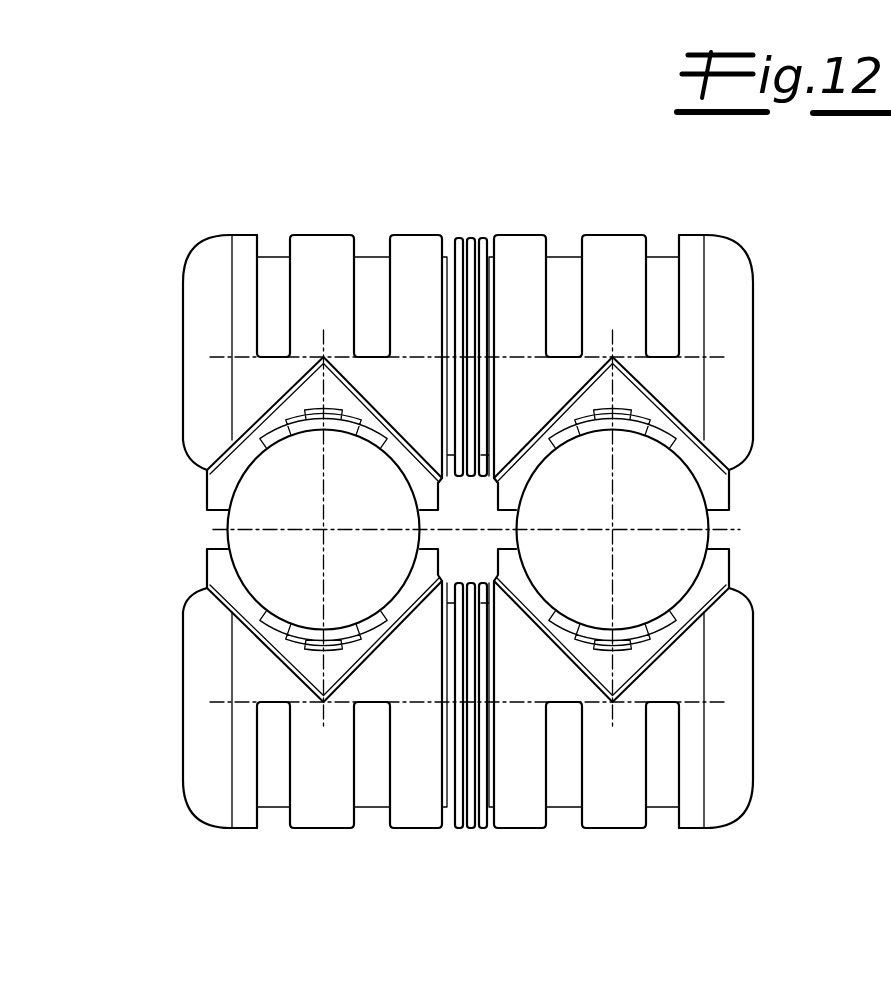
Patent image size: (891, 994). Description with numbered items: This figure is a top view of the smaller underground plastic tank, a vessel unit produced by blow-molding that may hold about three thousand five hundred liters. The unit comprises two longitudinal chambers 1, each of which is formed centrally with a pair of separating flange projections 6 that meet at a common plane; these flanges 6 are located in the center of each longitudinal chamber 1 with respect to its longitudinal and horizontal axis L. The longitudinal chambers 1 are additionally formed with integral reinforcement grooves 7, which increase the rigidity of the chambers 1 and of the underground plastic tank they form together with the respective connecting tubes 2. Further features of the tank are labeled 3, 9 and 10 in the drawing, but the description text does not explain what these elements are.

The longitudinal chamber 1 is at (512, 236).
The connecting tube 2 is at (207, 568).
The bearing segment 3 is at (233, 603).
The flange 6 is at (469, 735).
The reinforcement groove 7 is at (660, 325).
The first housing half 9 is at (232, 215).
The second housing half 10 is at (693, 217).
The longitudinal and horizontal axis L is at (723, 358).